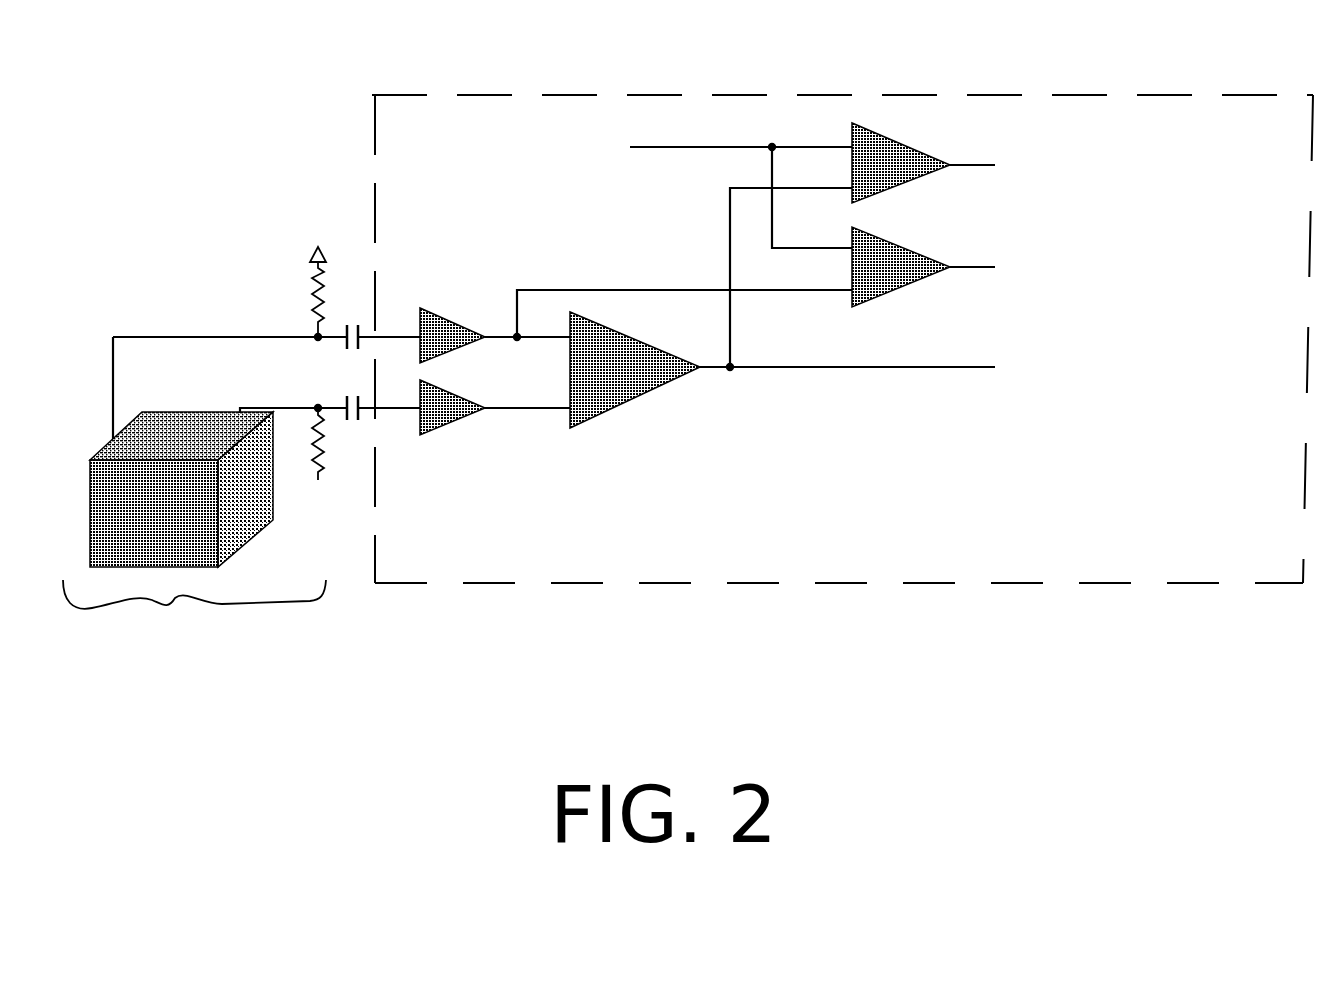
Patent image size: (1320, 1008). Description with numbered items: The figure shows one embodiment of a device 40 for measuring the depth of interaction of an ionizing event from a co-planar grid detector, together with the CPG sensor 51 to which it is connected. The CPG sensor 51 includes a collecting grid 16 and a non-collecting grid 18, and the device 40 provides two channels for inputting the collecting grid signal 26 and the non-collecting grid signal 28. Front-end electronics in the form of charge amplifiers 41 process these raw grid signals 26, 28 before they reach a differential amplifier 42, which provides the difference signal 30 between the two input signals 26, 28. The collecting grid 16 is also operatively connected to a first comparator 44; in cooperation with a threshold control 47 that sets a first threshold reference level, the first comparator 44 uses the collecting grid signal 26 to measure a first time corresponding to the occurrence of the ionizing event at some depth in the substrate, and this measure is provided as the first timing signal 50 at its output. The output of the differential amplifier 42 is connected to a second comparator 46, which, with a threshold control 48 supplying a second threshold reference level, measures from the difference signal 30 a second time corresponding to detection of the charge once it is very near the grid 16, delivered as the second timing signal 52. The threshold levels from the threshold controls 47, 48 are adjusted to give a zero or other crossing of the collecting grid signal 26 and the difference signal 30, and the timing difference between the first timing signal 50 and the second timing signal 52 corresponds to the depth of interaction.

The collecting grid 16 is at (113, 438).
The non-collecting grid 18 is at (273, 462).
The collecting grid signal 26 is at (380, 337).
The non-collecting grid signal 28 is at (395, 417).
The difference signal 30 is at (770, 370).
The device 40 is at (372, 97).
The charge amplifiers 41 is at (457, 385).
The differential amplifier 42 is at (600, 412).
The first comparator 44 is at (900, 292).
The second comparator 46 is at (910, 138).
The threshold control 47 is at (787, 147).
The threshold control 48 is at (817, 248).
The first timing signal 50 is at (1150, 273).
The CPG sensor 51 is at (175, 598).
The second timing signal 52 is at (1147, 160).